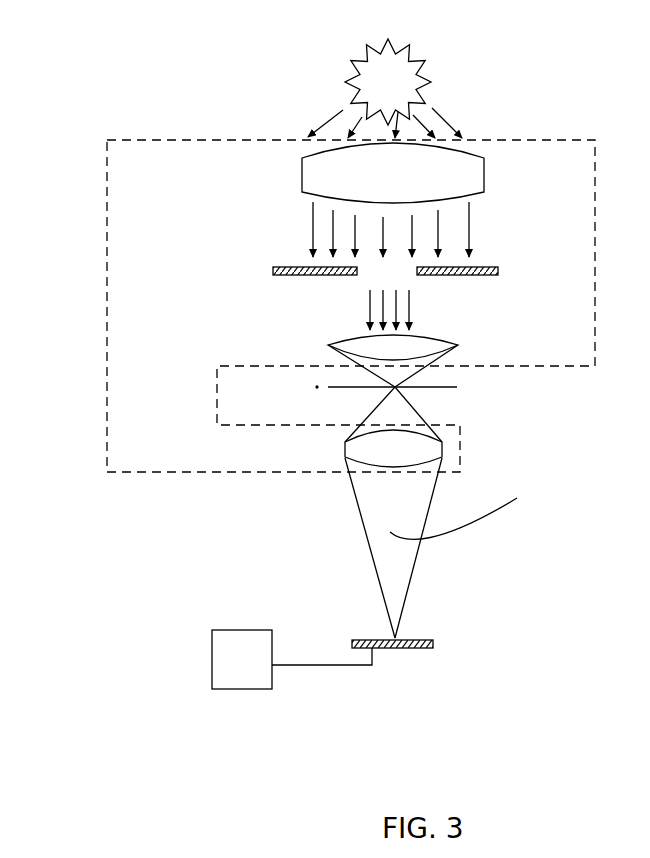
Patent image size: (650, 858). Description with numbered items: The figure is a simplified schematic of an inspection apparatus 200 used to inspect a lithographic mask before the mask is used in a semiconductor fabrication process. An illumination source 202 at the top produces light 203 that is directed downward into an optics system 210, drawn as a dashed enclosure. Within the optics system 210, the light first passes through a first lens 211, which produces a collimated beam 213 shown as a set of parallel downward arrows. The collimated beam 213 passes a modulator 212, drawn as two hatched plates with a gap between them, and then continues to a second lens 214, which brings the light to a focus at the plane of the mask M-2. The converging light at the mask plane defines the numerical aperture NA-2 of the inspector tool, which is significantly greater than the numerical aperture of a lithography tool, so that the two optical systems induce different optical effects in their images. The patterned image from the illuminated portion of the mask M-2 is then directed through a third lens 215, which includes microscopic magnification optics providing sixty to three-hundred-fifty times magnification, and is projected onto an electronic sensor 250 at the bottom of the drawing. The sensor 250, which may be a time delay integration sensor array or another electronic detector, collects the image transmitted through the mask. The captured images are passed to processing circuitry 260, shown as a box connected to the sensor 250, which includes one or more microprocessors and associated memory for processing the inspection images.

The inspection apparatus 200 is at (508, 78).
The illumination source 202 is at (415, 50).
The light 203 is at (313, 115).
The optics system 210 is at (107, 190).
The first lens 211 is at (300, 183).
The modulator 212 is at (273, 268).
The collimated beam 213 is at (300, 230).
The second lens 214 is at (325, 343).
The third lens 215 is at (340, 455).
The numerical aperture NA-2 is at (426, 366).
The mask M-2 is at (442, 390).
The electronic sensor 250 is at (415, 637).
The processing circuitry 260 is at (292, 659).